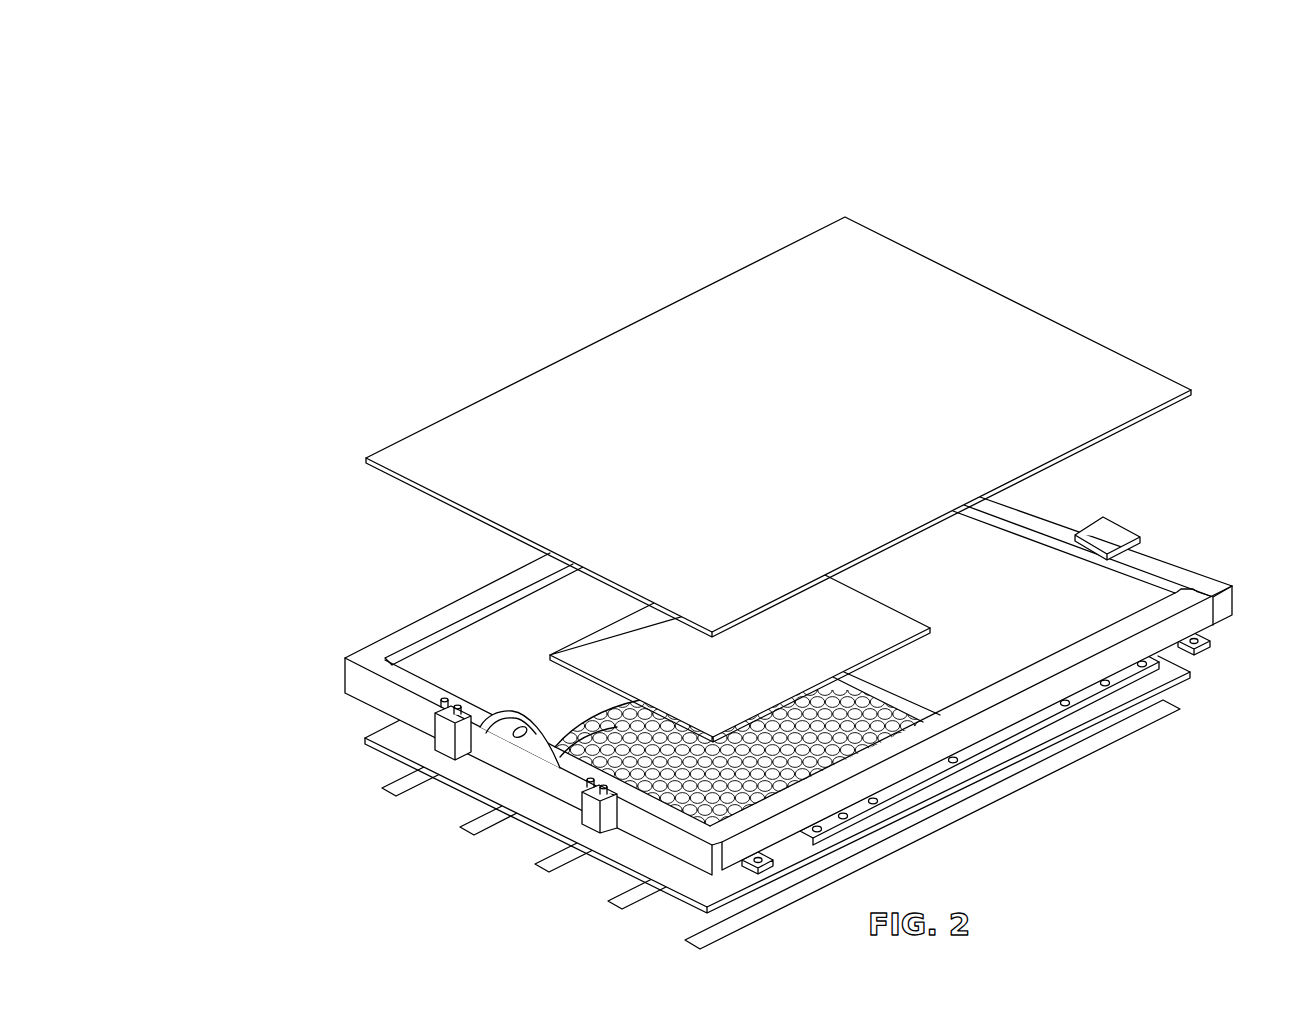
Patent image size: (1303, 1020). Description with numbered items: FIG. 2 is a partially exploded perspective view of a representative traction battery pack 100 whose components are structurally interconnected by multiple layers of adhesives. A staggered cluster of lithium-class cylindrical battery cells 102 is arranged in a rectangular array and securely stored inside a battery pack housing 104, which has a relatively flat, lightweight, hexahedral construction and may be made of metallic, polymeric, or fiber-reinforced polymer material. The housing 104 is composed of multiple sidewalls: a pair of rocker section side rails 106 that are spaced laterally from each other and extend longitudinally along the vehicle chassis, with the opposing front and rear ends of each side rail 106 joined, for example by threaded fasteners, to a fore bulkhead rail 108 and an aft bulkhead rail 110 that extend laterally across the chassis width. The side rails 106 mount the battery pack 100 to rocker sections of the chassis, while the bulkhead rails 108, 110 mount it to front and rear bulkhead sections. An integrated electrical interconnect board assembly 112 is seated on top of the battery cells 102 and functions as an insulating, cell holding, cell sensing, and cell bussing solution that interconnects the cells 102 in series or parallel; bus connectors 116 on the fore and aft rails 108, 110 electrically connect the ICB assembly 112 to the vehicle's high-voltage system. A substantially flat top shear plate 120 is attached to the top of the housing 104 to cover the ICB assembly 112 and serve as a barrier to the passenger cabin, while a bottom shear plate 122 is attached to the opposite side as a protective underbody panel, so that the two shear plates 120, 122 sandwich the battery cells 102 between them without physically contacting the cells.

The traction battery pack 100 is at (521, 138).
The battery cells 102 is at (850, 745).
The battery pack housing 104 is at (294, 588).
The rocker section side rails 106 is at (430, 620).
The fore bulkhead rail 108 is at (352, 675).
The aft bulkhead rail 110 is at (1113, 535).
The integrated electrical interconnect board assembly 112 is at (1025, 540).
The bus connectors 116 is at (447, 738).
The top shear plate 120 is at (1018, 322).
The bottom shear plate 122 is at (473, 795).